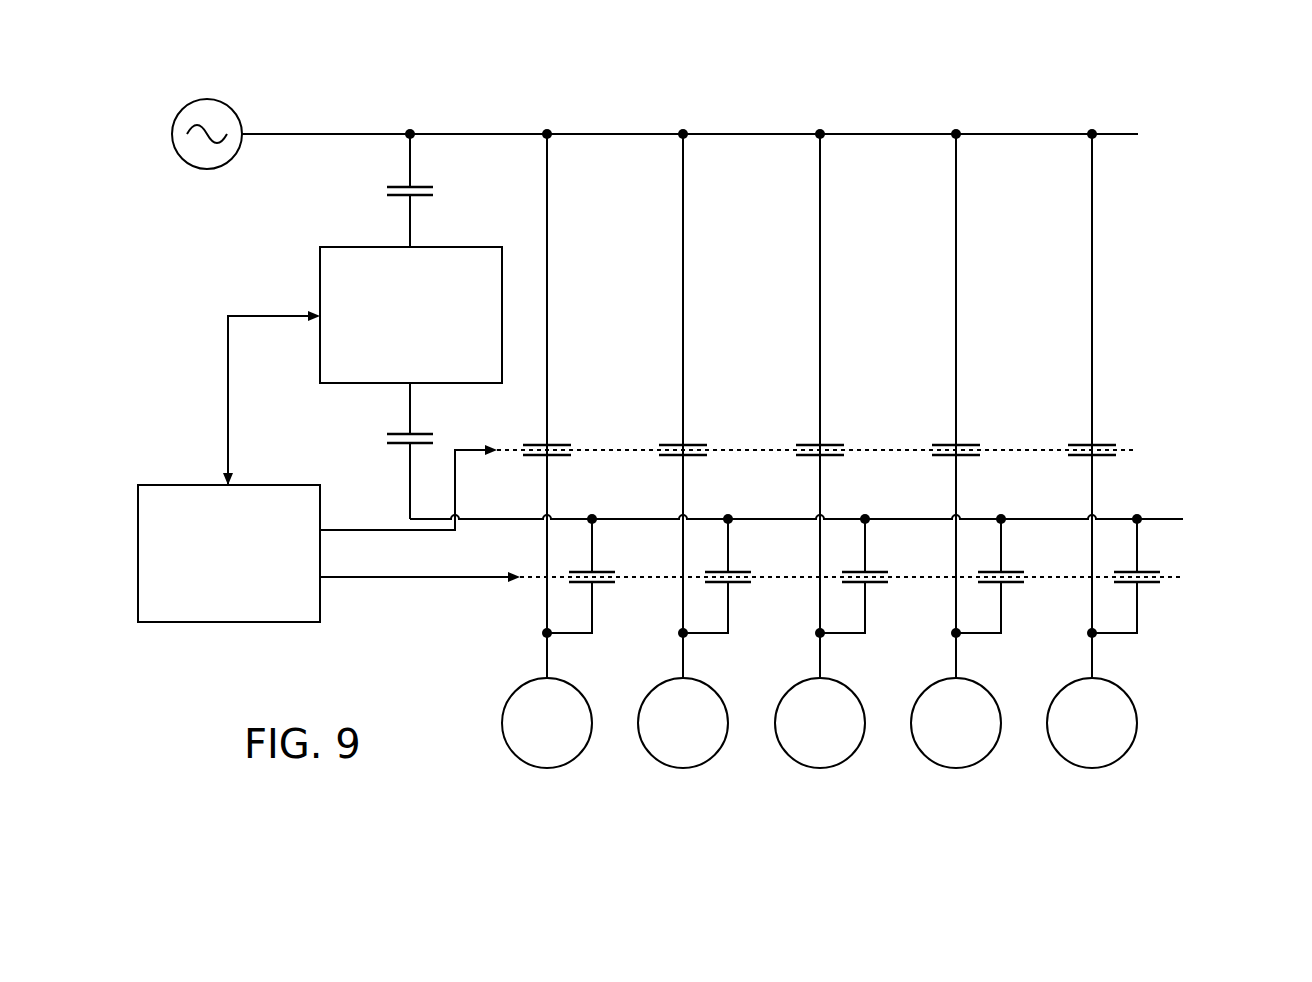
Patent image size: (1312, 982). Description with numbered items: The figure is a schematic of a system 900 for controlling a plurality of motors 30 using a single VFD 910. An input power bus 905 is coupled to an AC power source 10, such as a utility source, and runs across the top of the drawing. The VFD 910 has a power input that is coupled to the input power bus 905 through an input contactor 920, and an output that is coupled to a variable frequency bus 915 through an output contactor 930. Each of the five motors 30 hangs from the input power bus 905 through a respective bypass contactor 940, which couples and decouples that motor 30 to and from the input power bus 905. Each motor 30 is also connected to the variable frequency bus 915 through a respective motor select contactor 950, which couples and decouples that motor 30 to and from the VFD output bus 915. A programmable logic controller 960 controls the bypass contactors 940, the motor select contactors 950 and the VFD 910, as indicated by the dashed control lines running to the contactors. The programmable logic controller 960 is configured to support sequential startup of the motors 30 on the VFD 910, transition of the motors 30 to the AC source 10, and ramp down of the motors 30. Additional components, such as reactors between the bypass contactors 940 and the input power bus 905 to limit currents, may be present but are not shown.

The system for driving multiple motors 900 is at (1195, 102).
The AC power source 10 is at (210, 99).
The input power bus 905 is at (491, 133).
The VFD 910 is at (344, 247).
The input contactor 920 is at (430, 219).
The output contactor 930 is at (430, 413).
The variable frequency bus 915 is at (653, 518).
The bypass contactors 940 is at (566, 418).
The motor select contactors 950 is at (615, 599).
The motors 30 is at (547, 768).
The programmable logic controller 960 is at (227, 622).